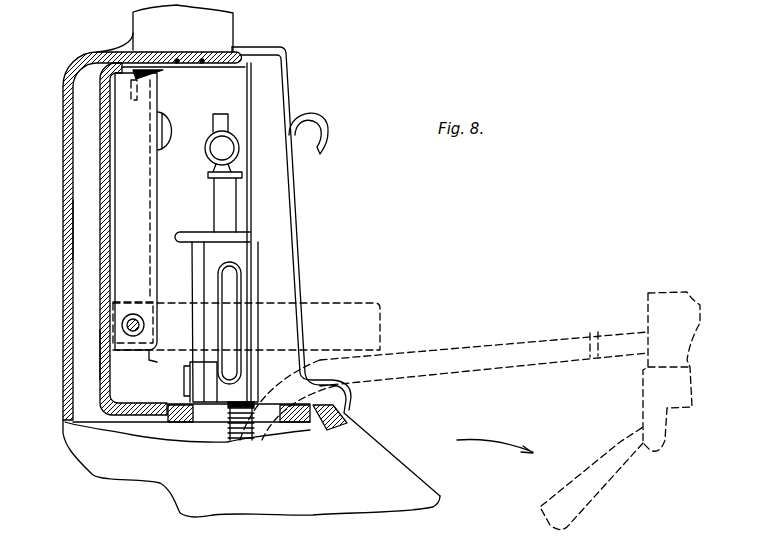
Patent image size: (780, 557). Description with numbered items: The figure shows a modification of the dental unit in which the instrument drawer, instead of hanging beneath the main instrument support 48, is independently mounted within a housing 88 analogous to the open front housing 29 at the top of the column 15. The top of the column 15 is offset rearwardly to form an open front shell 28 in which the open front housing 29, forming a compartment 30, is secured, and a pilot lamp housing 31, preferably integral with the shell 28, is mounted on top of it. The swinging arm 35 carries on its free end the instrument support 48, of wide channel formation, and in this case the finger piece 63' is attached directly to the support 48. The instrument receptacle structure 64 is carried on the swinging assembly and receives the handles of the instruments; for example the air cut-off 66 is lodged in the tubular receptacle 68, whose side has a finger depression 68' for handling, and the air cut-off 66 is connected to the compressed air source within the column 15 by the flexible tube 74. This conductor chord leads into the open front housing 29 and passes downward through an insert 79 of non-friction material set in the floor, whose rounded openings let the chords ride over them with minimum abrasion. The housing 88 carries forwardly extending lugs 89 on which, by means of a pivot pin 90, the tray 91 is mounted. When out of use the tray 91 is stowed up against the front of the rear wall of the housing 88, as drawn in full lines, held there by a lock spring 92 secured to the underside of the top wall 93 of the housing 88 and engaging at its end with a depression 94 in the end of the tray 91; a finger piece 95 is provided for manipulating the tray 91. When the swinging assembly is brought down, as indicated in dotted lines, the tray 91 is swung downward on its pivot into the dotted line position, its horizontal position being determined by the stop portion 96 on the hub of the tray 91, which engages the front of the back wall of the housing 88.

The column 15 is at (340, 503).
The shell 28 is at (63, 97).
The open front housing 29 is at (100, 122).
The compartment 30 is at (97, 53).
The pilot lamp housing 31 is at (137, 24).
The arm 35 is at (613, 452).
The instrument support 48 is at (277, 201).
The finger piece 63' is at (329, 129).
The instrument receptacle structure 64 is at (200, 386).
The air cut-off 66 is at (228, 213).
The tubular receptacle 68 is at (213, 317).
The finger depression 68' is at (253, 323).
The flexible tube 74 is at (250, 438).
The insert 79 is at (205, 417).
The housing 88 is at (103, 228).
The lugs 89 is at (100, 350).
The pivot pin 90 is at (140, 327).
The tray 91 is at (152, 194).
The lock spring 92 is at (165, 73).
The top wall 93 is at (188, 50).
The depression 94 is at (136, 82).
The finger piece 95 is at (172, 143).
The stop portion 96 is at (150, 359).